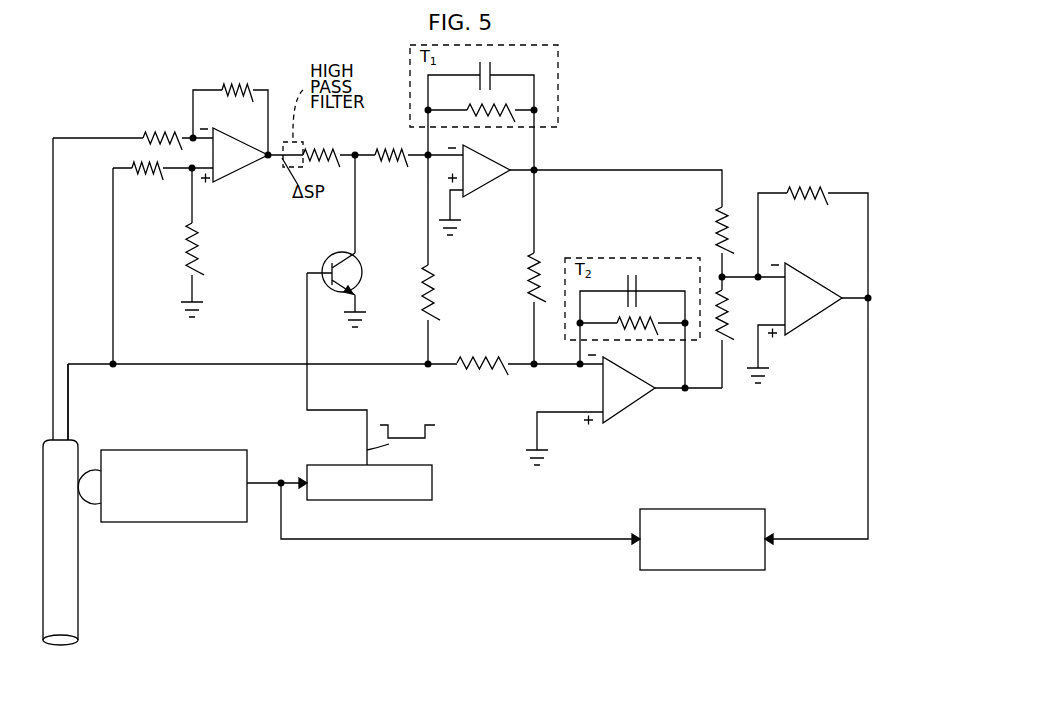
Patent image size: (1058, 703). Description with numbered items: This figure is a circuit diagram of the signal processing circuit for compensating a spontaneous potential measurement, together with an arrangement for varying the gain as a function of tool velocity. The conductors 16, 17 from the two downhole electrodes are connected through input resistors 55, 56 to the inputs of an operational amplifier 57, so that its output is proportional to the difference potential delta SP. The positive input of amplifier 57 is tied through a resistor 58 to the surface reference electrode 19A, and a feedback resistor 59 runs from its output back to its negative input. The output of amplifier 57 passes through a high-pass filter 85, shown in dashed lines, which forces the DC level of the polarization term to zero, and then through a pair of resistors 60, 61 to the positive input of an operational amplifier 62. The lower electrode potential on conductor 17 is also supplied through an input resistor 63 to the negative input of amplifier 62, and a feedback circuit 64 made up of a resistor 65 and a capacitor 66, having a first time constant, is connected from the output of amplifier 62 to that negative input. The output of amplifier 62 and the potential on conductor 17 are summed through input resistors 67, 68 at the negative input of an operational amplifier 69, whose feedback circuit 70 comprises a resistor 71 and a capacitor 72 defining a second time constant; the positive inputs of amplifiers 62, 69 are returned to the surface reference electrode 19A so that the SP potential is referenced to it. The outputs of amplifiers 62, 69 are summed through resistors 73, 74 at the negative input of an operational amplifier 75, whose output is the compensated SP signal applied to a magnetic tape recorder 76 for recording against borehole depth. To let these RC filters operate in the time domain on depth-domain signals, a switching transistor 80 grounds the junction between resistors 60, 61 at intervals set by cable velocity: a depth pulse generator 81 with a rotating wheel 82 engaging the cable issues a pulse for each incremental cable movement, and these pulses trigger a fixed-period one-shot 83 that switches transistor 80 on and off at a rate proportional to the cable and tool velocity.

The conductor 16 is at (52, 362).
The conductor 17 is at (70, 400).
The surface reference electrode 19A is at (204, 309).
The input resistor 55 is at (178, 131).
The input resistor 56 is at (153, 176).
The operational amplifier 57 is at (237, 158).
The resistor 58 is at (196, 257).
The feedback resistor 59 is at (246, 86).
The resistor 60 is at (310, 152).
The resistor 61 is at (395, 150).
The operational amplifier 62 is at (479, 180).
The input resistor 63 is at (432, 290).
The feedback circuit 64 is at (560, 78).
The resistor 65 is at (486, 118).
The capacitor 66 is at (494, 66).
The input resistor 67 is at (539, 257).
The input resistor 68 is at (475, 370).
The operational amplifier 69 is at (635, 392).
The time constant network T2 70 is at (668, 255).
The resistor 71 is at (627, 327).
The capacitor 72 is at (641, 287).
The resistor 73 is at (716, 222).
The resistor 74 is at (729, 316).
The operational amplifier 75 is at (811, 308).
The magnetic tape recorder 76 is at (718, 508).
The switching transistor 80 is at (357, 270).
The depth pulse generator 81 is at (227, 460).
The rotating wheel 82 is at (86, 470).
The one-shot 83 is at (352, 463).
The high-pass filter 85 is at (302, 168).